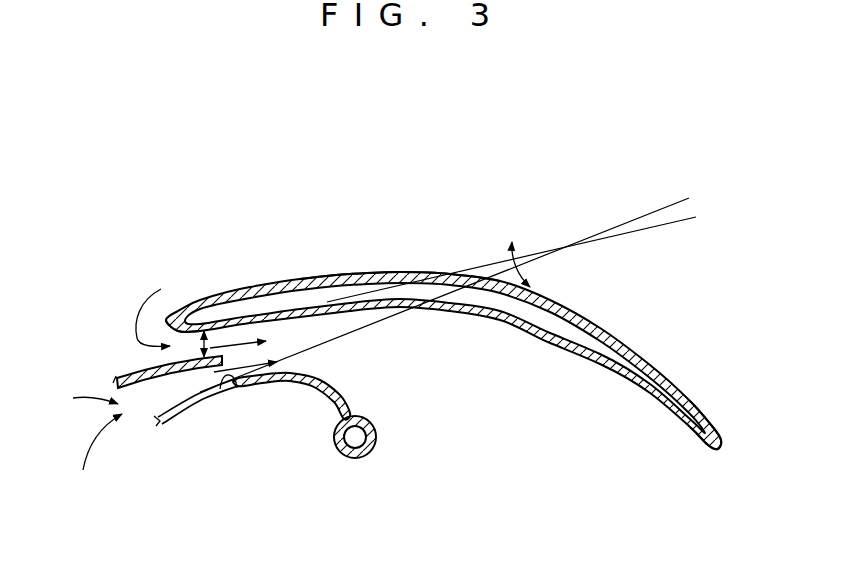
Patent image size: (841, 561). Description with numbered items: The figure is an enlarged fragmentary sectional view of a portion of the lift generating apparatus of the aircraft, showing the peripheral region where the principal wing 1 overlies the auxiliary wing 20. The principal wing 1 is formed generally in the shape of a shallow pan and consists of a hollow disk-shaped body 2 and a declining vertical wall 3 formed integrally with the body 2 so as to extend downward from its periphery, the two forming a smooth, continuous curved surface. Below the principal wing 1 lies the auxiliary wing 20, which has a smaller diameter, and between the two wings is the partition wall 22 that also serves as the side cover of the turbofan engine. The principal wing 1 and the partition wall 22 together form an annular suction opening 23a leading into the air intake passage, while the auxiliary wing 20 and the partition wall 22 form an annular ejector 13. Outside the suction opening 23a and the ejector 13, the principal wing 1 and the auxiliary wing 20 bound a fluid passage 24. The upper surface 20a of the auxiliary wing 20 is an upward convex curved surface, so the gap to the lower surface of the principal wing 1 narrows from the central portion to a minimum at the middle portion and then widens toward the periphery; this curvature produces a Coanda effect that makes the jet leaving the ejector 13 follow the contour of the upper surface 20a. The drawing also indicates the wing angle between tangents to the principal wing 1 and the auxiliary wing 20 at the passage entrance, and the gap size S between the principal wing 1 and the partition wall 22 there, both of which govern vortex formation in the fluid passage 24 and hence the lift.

The principal wing 1 is at (570, 305).
The body 2 is at (399, 273).
The vertical wall 3 is at (692, 396).
The ejector 13 is at (213, 384).
The auxiliary wing 20 is at (364, 411).
The upper surface of the auxiliary wing 20a is at (237, 386).
The partition wall 22 is at (137, 390).
The suction opening 23a is at (228, 334).
The fluid passage 24 is at (316, 342).
The gap size S is at (194, 345).